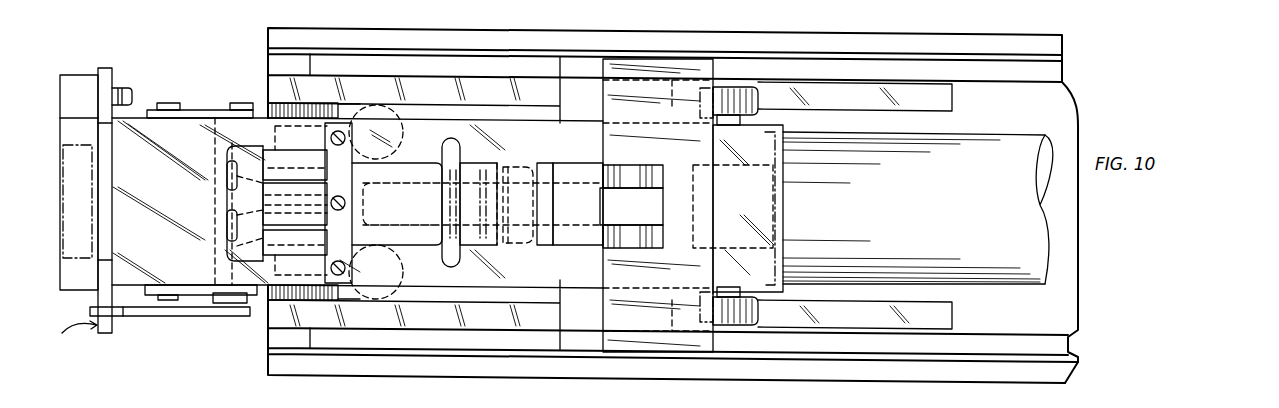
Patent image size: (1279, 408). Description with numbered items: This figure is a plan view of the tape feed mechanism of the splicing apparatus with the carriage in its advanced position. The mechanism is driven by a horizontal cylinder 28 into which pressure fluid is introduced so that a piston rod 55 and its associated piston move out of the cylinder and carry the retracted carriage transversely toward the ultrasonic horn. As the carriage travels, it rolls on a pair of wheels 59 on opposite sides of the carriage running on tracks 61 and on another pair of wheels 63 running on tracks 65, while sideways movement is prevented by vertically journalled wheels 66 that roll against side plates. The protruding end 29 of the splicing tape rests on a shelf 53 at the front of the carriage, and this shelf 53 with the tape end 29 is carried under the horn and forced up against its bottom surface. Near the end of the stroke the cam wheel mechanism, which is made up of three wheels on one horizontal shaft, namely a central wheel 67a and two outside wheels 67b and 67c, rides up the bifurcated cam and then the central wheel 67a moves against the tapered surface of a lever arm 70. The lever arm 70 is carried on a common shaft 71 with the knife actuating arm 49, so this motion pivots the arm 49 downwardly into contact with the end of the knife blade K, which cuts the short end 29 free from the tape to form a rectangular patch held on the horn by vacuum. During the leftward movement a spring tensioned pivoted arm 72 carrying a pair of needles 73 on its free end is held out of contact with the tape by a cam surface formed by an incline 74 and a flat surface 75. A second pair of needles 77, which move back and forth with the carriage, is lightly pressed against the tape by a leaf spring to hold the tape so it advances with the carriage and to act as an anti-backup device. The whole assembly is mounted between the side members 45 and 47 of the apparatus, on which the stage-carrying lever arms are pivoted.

The horizontal cylinder 28 is at (998, 199).
The protruding end of tape 29 is at (63, 152).
The side member 45 is at (1030, 372).
The side member 47 is at (1017, 45).
The knife actuating arm 49 is at (133, 316).
The shelf 53 is at (72, 83).
The piston rod 55 is at (675, 163).
The wheels 59 is at (731, 108).
The tracks 61 is at (943, 105).
The wheels 63 is at (272, 102).
The tracks 65 is at (347, 110).
The vertically journalled wheels 66 is at (370, 107).
The central wheel 67a is at (225, 212).
The outside wheel 67b is at (225, 170).
The outside wheel 67c is at (225, 246).
The lever arm 70 is at (208, 195).
The common shaft 71 is at (212, 140).
The spring tensioned pivoted arm 72 is at (577, 177).
The needles 73 is at (510, 170).
The incline 74 is at (445, 137).
The flat surface 75 is at (538, 135).
The second pair of needles 77 is at (257, 171).
The knife blade K is at (71, 332).